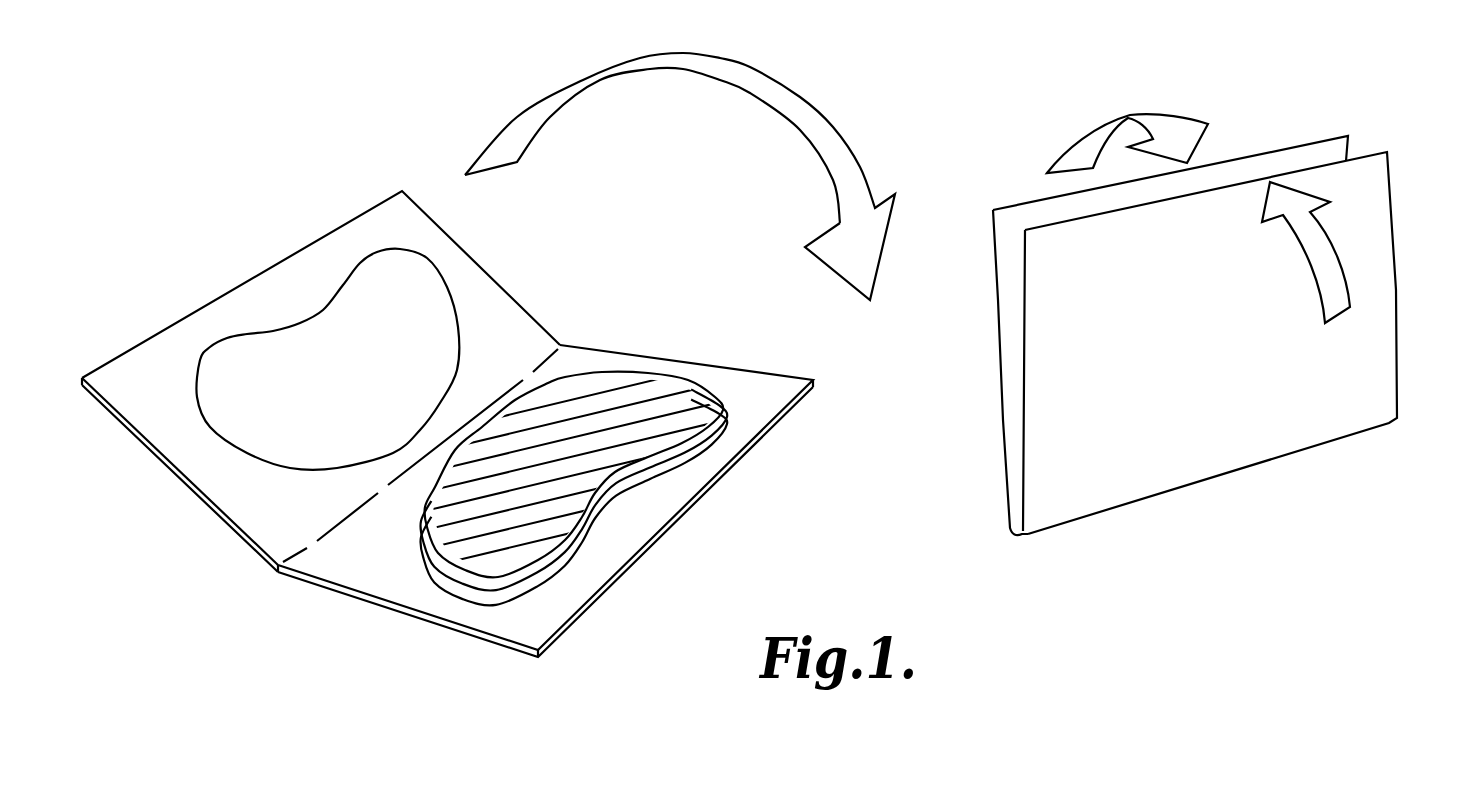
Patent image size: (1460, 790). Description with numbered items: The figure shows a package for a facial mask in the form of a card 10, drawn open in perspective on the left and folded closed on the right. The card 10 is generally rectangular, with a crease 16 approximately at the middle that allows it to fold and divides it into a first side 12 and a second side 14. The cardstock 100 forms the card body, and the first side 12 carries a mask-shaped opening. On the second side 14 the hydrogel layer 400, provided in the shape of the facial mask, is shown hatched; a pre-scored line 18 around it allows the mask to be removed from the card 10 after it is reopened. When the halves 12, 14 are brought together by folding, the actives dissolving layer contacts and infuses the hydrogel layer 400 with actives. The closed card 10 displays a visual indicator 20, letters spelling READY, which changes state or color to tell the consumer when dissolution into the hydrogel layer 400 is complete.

The card 10 is at (337, 178).
The first side 12 is at (148, 452).
The second side 14 is at (391, 616).
The crease 16 is at (278, 575).
The pre-scored line 18 is at (677, 473).
The visual indicator 20 is at (1117, 385).
The cardstock layer 100 is at (508, 302).
The hydrogel layer 400 is at (670, 392).